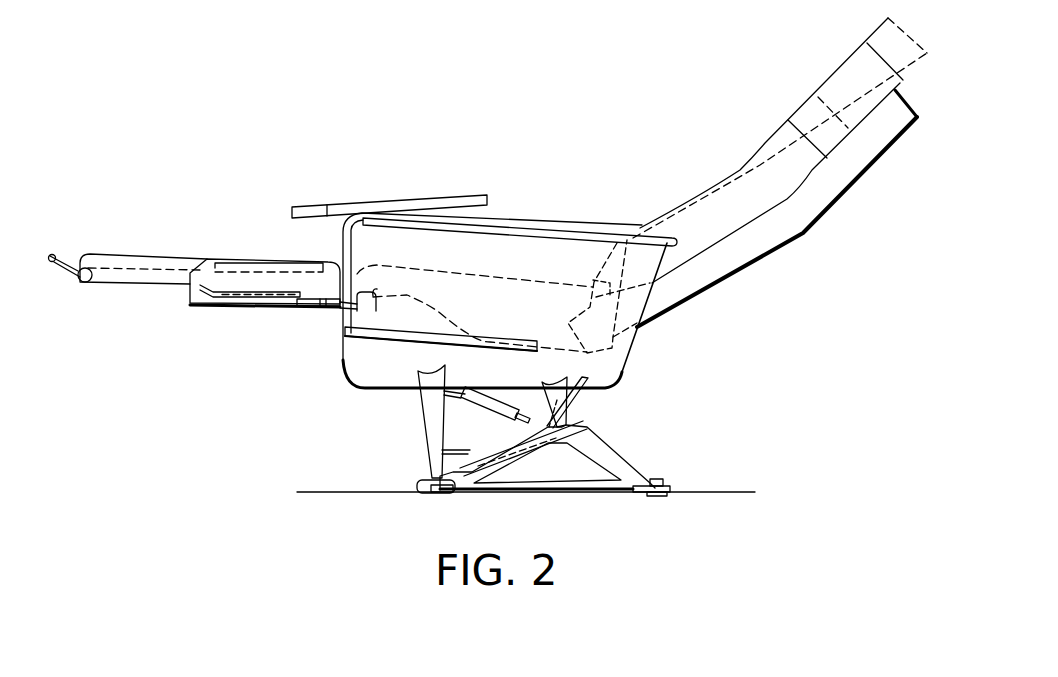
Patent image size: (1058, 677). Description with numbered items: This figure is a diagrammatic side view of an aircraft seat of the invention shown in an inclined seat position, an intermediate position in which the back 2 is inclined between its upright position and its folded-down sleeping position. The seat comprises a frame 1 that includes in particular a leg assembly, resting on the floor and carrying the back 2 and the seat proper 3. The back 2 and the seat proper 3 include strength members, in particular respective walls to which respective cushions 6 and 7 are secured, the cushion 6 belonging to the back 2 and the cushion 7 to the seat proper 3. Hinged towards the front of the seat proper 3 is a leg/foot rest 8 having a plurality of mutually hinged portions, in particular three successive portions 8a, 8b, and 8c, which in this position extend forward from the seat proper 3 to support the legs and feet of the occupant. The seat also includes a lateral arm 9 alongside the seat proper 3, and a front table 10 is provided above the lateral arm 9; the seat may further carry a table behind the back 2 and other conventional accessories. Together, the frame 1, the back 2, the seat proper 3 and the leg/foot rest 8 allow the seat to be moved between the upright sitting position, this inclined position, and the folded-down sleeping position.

The frame 1 is at (607, 446).
The back 2 is at (717, 268).
The seat proper 3 is at (362, 293).
The cushion 6 is at (727, 178).
The cushion 7 is at (424, 270).
The leg/foot rest 8 is at (228, 261).
The first portion of the leg/foot rest 8a is at (277, 260).
The second portion of the leg/foot rest 8b is at (153, 255).
The third portion of the leg/foot rest 8c is at (63, 250).
The lateral arm 9 is at (377, 357).
The front table 10 is at (343, 207).